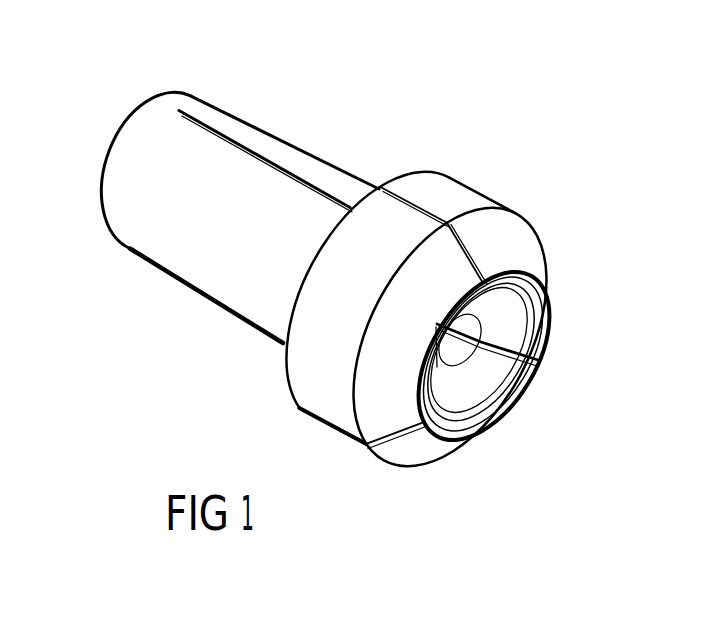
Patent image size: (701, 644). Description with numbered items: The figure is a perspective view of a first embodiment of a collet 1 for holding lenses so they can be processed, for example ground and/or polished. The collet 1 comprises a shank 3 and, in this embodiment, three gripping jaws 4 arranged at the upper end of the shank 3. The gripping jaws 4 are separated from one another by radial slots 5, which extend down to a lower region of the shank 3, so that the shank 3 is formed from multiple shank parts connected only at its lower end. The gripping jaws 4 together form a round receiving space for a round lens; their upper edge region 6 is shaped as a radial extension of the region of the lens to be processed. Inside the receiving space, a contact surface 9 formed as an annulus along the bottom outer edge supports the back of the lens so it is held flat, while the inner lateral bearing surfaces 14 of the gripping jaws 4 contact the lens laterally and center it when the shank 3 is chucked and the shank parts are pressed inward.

The collet 1 is at (92, 40).
The shank 3 is at (125, 213).
The gripping jaws 4 is at (458, 190).
The radial slots 5 is at (241, 147).
The upper edge region 6 is at (534, 252).
The contact surface 9 is at (490, 415).
The inner lateral bearing surfaces 14 is at (523, 376).